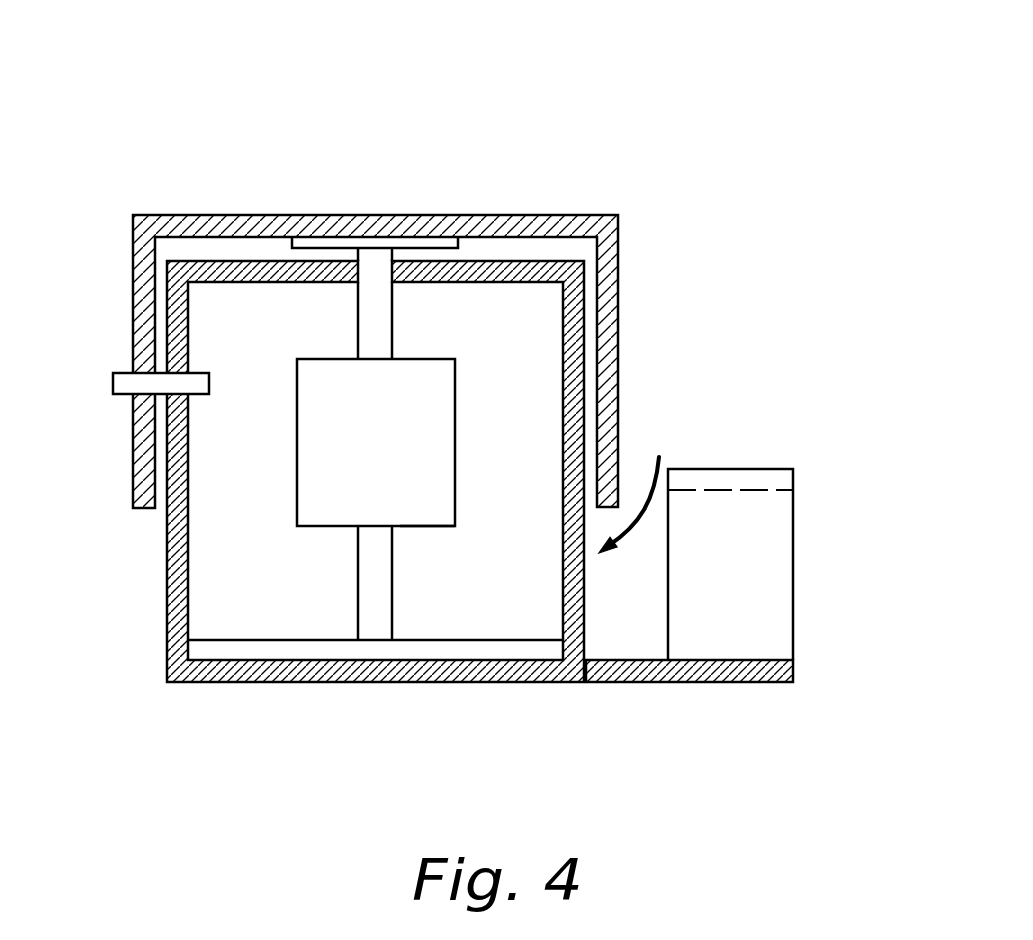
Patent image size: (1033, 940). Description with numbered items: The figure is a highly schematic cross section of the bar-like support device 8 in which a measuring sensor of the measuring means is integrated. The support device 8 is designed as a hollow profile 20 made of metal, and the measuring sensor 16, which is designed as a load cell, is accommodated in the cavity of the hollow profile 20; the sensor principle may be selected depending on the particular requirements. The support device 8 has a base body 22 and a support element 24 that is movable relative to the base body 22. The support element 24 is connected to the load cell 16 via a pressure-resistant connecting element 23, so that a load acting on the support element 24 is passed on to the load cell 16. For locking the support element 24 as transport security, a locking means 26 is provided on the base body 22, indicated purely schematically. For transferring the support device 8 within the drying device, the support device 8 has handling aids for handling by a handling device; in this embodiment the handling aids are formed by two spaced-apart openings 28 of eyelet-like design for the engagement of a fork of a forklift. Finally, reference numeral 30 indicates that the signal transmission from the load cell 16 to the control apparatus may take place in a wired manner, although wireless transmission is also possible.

The support device 8 is at (642, 115).
The measuring sensor 16 is at (312, 502).
The hollow profile 20 is at (643, 471).
The base body 22 is at (272, 670).
The connecting element 23 is at (377, 303).
The support element 24 is at (618, 290).
The locking means 26 is at (133, 385).
The opening 28 is at (737, 512).
The wired signal transmission 30 is at (437, 522).